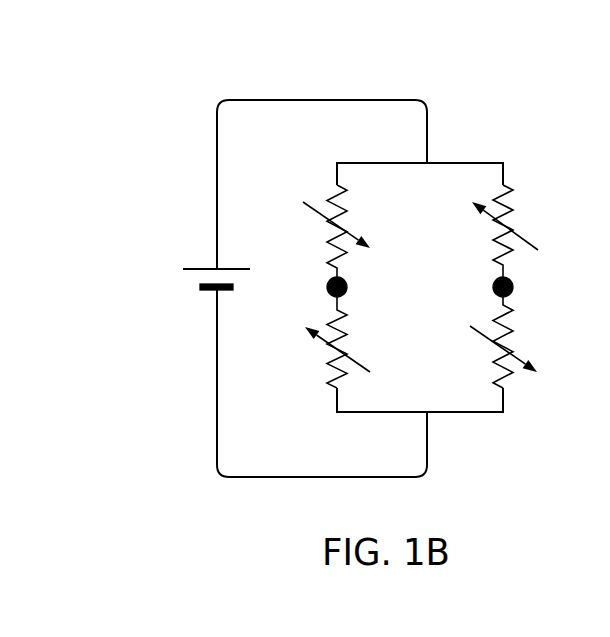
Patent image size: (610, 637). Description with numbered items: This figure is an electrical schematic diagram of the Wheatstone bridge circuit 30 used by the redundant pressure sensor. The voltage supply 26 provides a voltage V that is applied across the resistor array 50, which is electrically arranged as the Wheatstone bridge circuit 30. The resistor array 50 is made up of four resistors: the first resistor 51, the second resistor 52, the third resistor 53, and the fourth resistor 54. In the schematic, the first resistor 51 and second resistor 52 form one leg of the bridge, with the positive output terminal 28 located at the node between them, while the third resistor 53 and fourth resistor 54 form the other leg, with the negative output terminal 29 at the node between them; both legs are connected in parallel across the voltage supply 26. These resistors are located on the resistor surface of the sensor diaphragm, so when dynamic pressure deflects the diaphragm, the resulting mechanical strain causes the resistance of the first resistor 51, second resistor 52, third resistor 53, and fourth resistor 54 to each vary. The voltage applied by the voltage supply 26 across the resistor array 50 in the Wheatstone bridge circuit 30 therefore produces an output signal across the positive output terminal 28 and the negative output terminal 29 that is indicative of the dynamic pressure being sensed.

The Wheatstone bridge circuit 30 is at (363, 71).
The resistor array 50 is at (480, 101).
The voltage supply 26 is at (205, 268).
The first resistor 51 is at (332, 193).
The second resistor 52 is at (330, 316).
The third resistor 53 is at (506, 186).
The fourth resistor 54 is at (500, 318).
The positive output terminal 28 is at (345, 283).
The negative output terminal 29 is at (494, 285).